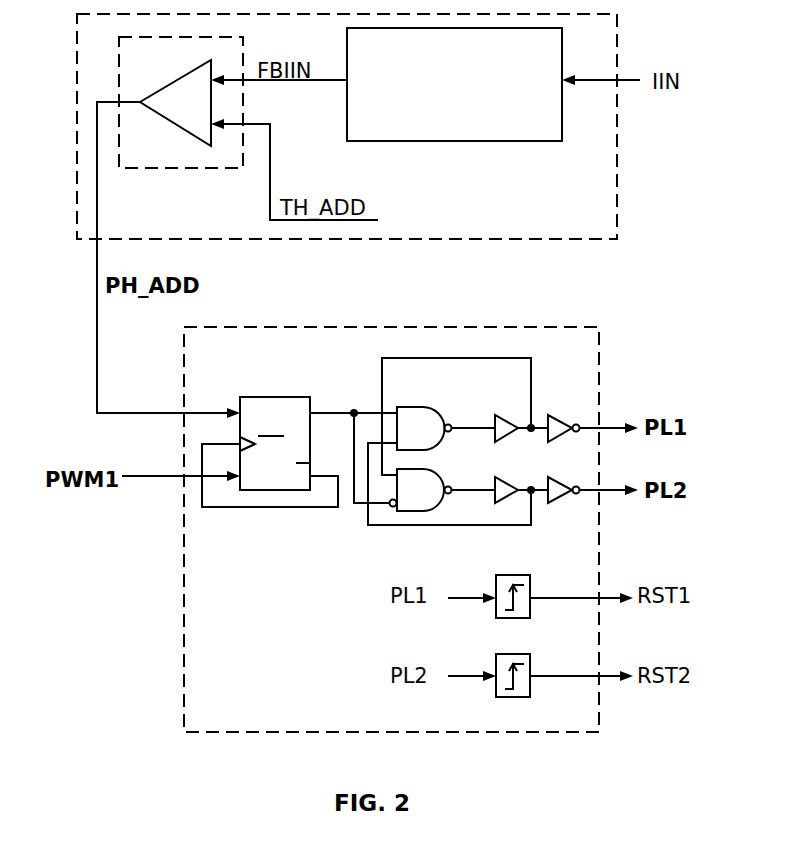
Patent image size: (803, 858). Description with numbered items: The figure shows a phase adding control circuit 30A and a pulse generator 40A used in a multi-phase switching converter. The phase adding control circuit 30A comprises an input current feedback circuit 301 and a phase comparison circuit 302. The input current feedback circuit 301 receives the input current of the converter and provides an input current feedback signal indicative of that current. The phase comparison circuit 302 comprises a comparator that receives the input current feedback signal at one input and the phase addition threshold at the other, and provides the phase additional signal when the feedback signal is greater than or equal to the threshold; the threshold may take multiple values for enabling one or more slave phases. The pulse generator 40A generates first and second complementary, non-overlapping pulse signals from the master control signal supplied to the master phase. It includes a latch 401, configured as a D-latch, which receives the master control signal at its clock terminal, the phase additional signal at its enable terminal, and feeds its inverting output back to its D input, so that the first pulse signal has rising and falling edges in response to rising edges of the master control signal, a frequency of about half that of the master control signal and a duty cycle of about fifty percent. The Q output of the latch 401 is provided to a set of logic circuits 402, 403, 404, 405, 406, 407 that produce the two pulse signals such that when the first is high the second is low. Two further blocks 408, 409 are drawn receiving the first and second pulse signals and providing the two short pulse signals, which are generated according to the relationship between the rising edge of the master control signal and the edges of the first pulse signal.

The phase adding control circuit 30A is at (545, 203).
The input current feedback circuit 301 is at (467, 142).
The phase comparison circuit 302 is at (170, 170).
The pulse generator 40A is at (250, 710).
The latch 401 is at (255, 397).
The logic circuit 402 is at (414, 407).
The logic circuit 403 is at (446, 466).
The logic circuit 404 is at (503, 415).
The logic circuit 405 is at (504, 477).
The logic circuit 406 is at (558, 415).
The logic circuit 407 is at (561, 477).
The edge detector 408 is at (531, 582).
The edge detector 409 is at (531, 661).